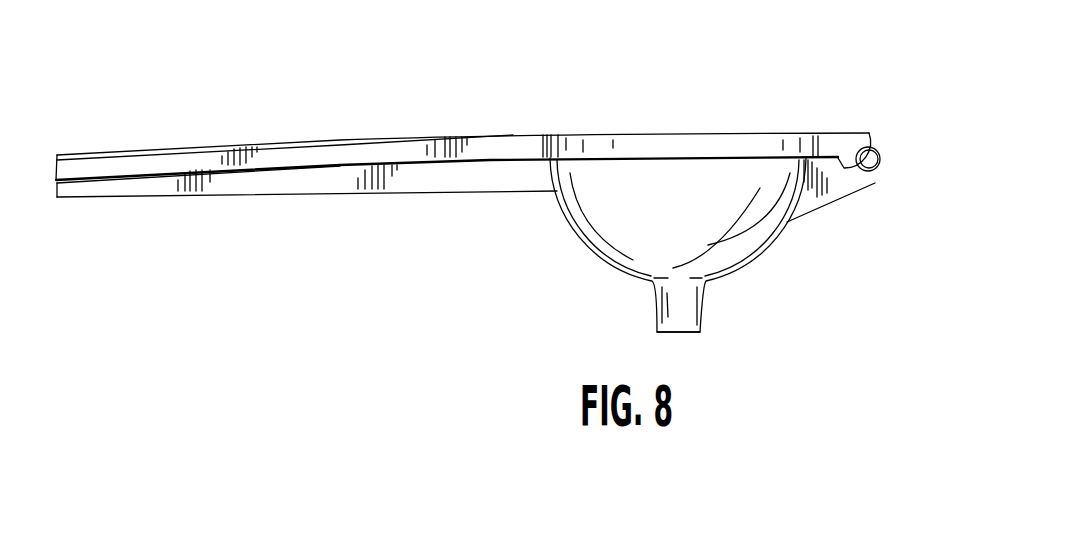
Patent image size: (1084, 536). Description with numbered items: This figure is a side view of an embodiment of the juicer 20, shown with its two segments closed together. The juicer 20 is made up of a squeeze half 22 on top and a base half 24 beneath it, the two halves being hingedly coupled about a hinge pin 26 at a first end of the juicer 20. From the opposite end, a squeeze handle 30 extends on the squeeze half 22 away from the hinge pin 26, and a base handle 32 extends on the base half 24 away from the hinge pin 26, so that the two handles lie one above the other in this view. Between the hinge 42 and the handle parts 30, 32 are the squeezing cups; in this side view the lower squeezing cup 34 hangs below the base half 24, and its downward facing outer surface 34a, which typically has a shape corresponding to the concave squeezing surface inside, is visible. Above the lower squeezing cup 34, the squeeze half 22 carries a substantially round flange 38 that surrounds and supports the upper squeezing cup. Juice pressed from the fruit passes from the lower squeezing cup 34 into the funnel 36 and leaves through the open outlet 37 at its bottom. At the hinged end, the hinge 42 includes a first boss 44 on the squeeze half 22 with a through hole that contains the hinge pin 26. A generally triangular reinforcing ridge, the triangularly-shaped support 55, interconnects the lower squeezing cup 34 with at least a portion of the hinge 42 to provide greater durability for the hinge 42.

The juicer 20 is at (508, 201).
The squeeze half 22 is at (462, 122).
The base half 24 is at (307, 218).
The hinge pin 26 is at (877, 162).
The squeeze handle 30 is at (462, 124).
The base handle 32 is at (327, 183).
The lower squeezing cup 34 is at (650, 273).
The downward facing outer surface 34a is at (620, 237).
The funnel 36 is at (726, 333).
The outlet 37 is at (698, 335).
The flange 38 is at (678, 144).
The hinge 42 is at (882, 149).
The first boss 44 is at (878, 175).
The triangularly-shaped support 55 is at (847, 187).